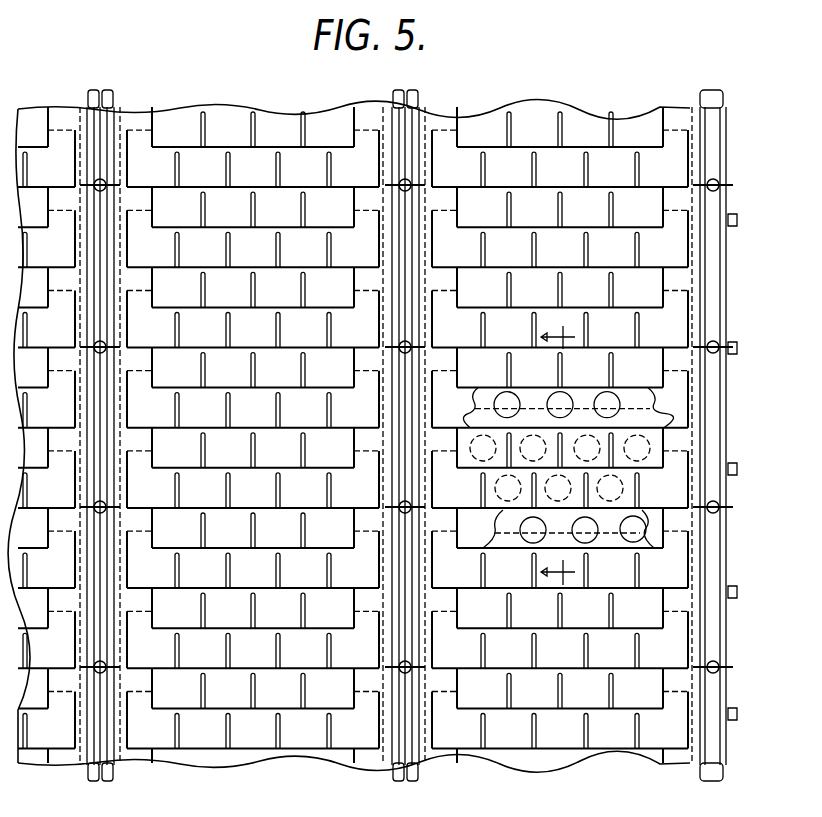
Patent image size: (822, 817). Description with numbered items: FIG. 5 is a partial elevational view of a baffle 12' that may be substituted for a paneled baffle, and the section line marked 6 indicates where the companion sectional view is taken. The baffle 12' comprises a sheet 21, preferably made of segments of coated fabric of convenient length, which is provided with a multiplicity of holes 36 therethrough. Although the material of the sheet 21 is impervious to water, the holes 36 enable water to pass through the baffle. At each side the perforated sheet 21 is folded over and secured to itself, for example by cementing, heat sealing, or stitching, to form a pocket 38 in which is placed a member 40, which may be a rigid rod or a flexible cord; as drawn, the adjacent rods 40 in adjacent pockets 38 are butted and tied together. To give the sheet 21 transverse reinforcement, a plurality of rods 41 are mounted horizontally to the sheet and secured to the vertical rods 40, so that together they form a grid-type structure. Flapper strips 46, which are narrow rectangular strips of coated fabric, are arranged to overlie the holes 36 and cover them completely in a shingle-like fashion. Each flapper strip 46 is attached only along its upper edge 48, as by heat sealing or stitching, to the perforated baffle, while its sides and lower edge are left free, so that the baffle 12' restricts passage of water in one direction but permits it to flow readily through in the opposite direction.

The baffle 12' is at (349, 447).
The sheet 21 is at (700, 767).
The holes 36 is at (630, 533).
The pocket 38 is at (92, 125).
The member 40 is at (112, 100).
The rods 41 is at (737, 222).
The flapper strips 46 is at (655, 452).
The upper edge 48 is at (678, 292).
The section line 6- 6 is at (558, 456).